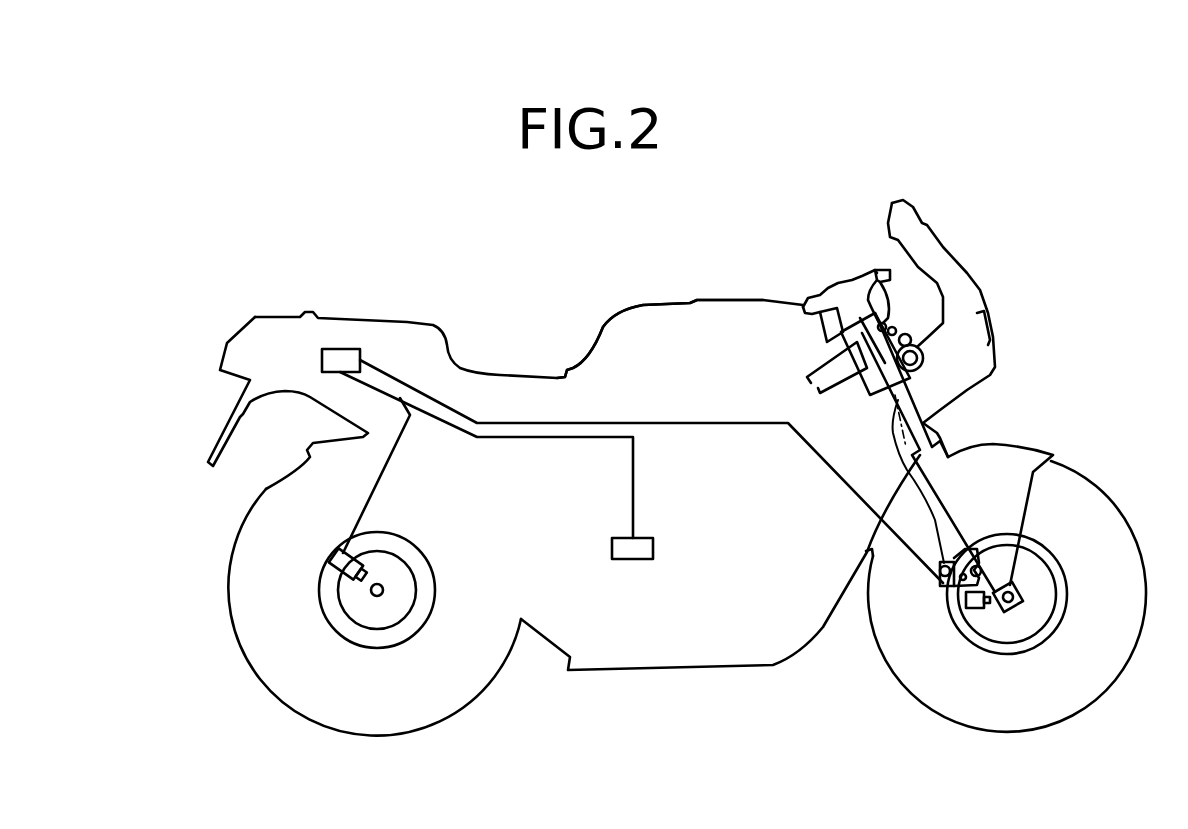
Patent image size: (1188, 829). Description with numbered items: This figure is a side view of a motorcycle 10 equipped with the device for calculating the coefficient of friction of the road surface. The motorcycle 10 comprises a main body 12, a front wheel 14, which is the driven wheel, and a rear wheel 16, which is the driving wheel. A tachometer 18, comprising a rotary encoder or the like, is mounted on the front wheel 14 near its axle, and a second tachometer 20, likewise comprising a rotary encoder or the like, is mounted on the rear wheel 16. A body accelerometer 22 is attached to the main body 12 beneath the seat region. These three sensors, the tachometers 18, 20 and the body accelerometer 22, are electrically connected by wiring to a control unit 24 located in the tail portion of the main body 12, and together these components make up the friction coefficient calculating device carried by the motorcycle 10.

The motorcycle 10 is at (514, 280).
The main body 12 is at (643, 300).
The front wheel 14 is at (1098, 481).
The rear wheel 16 is at (239, 532).
The tachometer 18 is at (977, 612).
The tachometer 20 is at (332, 559).
The body accelerometer 22 is at (612, 547).
The control unit 24 is at (340, 357).